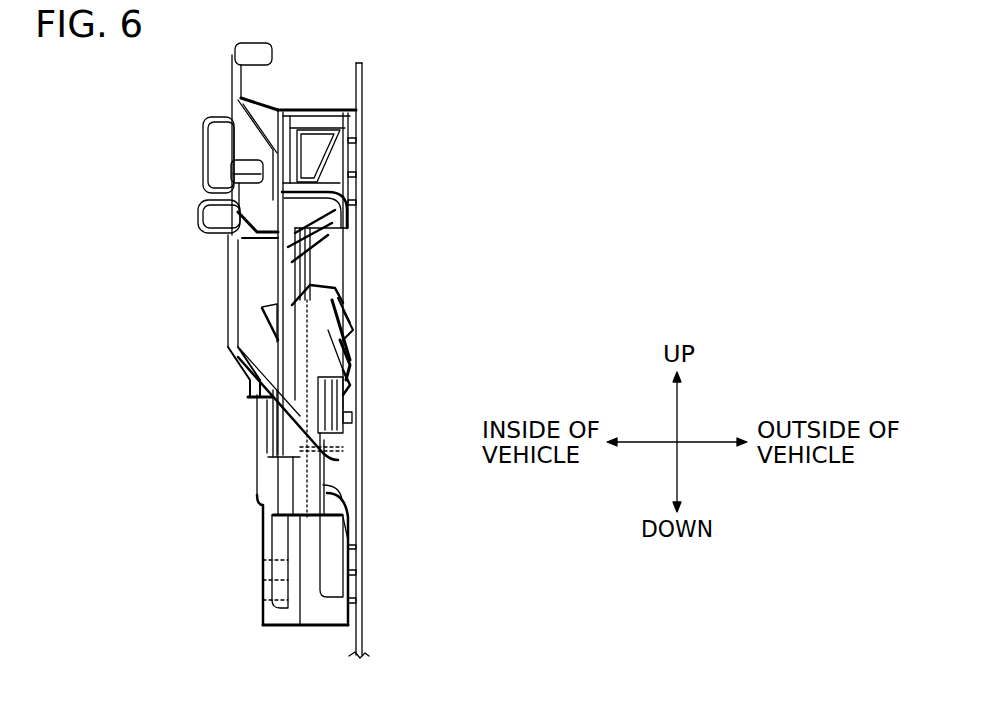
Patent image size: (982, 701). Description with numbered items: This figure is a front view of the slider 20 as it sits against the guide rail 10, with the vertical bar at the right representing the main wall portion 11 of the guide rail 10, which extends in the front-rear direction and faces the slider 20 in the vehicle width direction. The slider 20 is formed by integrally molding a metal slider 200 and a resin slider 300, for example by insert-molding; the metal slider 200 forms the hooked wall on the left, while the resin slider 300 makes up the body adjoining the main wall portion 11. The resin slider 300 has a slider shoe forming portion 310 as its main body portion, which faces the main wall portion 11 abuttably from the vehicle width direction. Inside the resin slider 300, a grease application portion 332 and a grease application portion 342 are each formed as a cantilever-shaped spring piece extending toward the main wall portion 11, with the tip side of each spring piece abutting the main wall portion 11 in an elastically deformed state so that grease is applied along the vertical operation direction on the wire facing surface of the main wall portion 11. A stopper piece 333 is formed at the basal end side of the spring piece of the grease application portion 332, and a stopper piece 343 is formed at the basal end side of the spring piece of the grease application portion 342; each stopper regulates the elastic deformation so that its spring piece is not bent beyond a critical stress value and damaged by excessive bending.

The guide rail 10 is at (421, 360).
The main wall portion 11 is at (367, 90).
The slider 20 is at (377, 42).
The metal slider 200 is at (255, 98).
The resin slider 300 is at (290, 110).
The slider shoe forming portion 310 is at (347, 208).
The grease application portion 332 is at (357, 335).
The stopper piece 333 is at (353, 387).
The grease application portion 342 is at (357, 310).
The stopper piece 343 is at (357, 363).